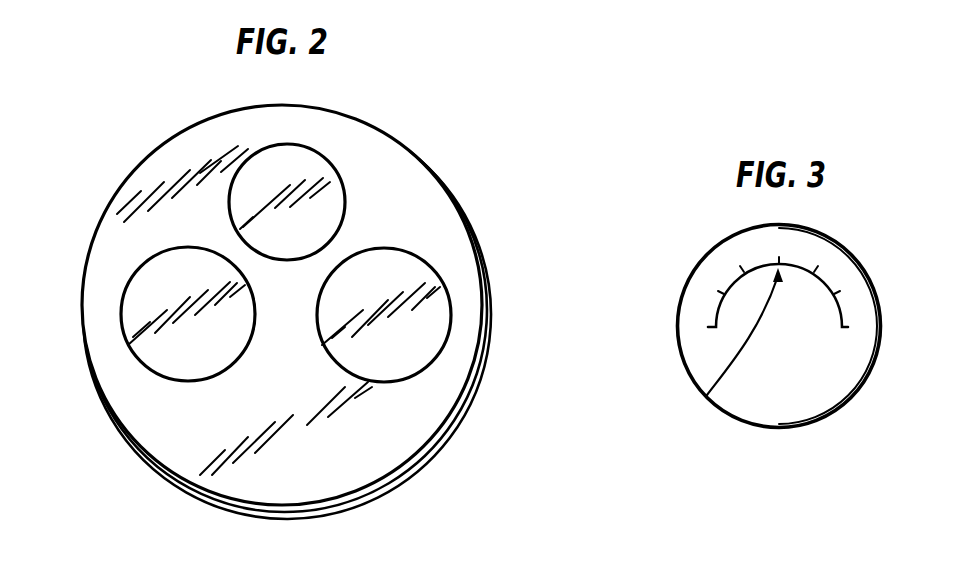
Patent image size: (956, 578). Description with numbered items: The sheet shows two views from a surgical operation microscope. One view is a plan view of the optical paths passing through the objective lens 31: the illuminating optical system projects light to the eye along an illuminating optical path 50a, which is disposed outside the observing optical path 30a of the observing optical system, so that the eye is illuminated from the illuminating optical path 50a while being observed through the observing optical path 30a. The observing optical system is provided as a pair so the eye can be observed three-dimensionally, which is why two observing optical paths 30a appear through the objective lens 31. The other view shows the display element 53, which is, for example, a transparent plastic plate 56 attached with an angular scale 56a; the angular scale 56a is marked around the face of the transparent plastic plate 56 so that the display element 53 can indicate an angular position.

In FIG. 2, the objective lens 31 is at (158, 152).
In FIG. 2, the illuminating optical path 50a is at (342, 182).
In FIG. 2, the observing optical path 30a is at (450, 325).
In FIG. 3, the display element 53 is at (849, 400).
In FIG. 3, the transparent plastic plate 56 is at (773, 381).
In FIG. 3, the angular scale 56a is at (712, 390).